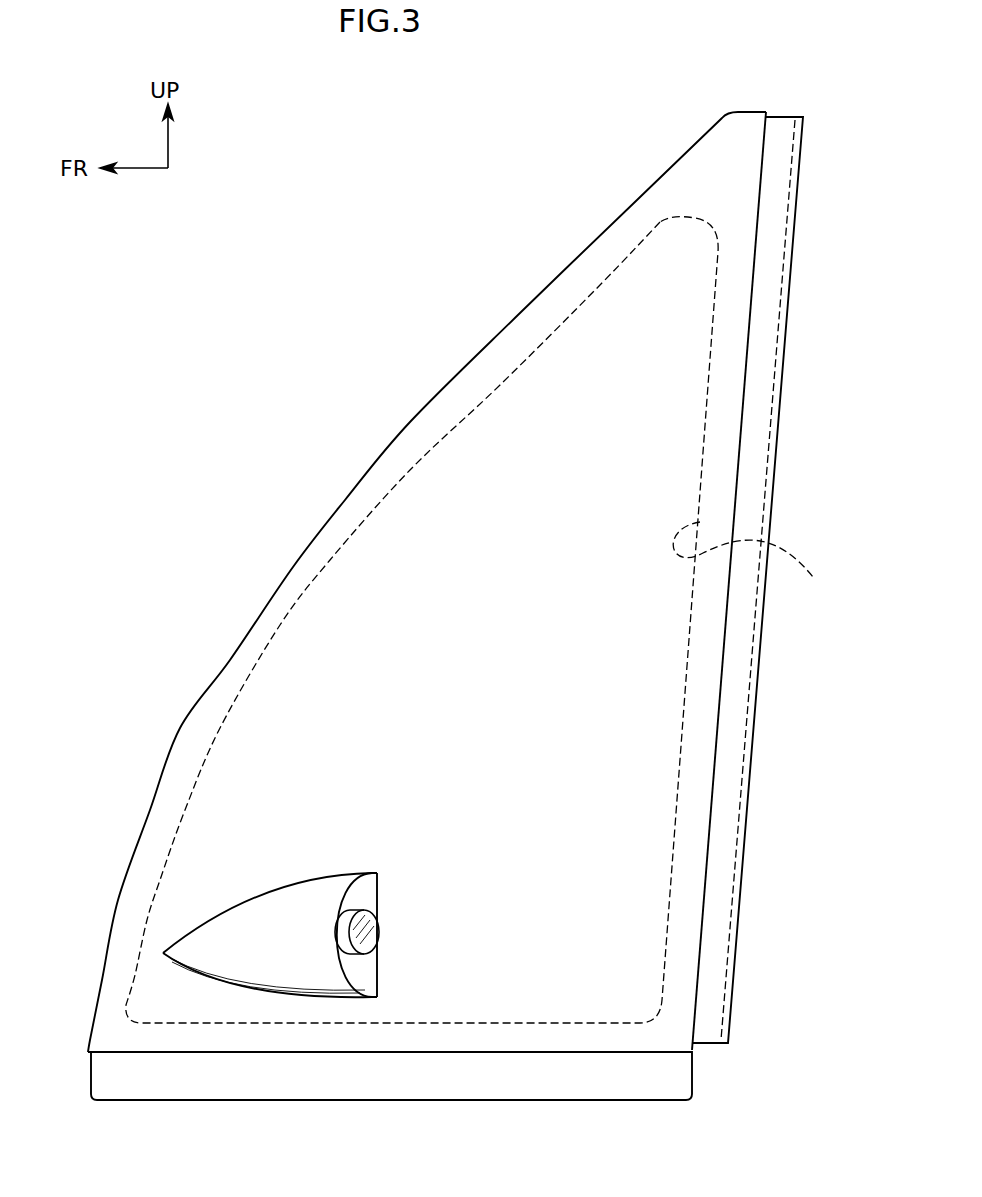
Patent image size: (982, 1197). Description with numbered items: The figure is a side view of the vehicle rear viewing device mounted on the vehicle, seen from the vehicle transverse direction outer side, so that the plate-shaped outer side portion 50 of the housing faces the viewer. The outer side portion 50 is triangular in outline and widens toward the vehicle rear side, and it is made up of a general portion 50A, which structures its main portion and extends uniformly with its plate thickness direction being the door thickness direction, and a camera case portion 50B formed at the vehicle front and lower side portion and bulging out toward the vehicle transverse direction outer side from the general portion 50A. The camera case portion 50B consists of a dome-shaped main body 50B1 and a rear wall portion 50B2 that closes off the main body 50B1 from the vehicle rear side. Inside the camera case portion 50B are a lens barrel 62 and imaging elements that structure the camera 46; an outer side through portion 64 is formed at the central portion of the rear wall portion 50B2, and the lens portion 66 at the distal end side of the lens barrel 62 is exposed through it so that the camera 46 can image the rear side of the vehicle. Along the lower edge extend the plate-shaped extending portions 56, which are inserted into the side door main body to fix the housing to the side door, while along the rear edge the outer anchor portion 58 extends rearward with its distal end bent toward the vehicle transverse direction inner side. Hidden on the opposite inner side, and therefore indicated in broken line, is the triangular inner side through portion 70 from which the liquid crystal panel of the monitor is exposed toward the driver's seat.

The camera 46 is at (354, 959).
The outer side portion 50 is at (461, 606).
The general portion 50A is at (729, 192).
The camera case portion 50B is at (354, 959).
The main body 50B1 is at (235, 940).
The rear wall portion 50B2 is at (400, 973).
The extending portions 56 is at (228, 1087).
The outer anchor portion 58 is at (728, 762).
The lens barrel 62 is at (378, 922).
The outer side through portion 64 is at (352, 938).
The lens portion 66 is at (440, 932).
The inner side through portion 70 is at (753, 562).